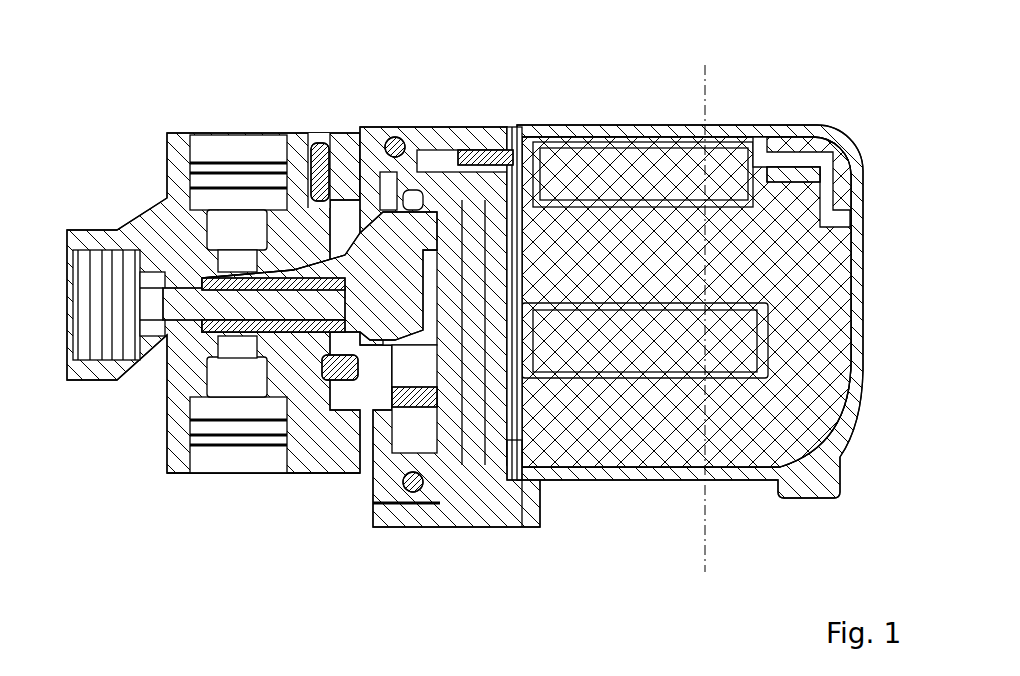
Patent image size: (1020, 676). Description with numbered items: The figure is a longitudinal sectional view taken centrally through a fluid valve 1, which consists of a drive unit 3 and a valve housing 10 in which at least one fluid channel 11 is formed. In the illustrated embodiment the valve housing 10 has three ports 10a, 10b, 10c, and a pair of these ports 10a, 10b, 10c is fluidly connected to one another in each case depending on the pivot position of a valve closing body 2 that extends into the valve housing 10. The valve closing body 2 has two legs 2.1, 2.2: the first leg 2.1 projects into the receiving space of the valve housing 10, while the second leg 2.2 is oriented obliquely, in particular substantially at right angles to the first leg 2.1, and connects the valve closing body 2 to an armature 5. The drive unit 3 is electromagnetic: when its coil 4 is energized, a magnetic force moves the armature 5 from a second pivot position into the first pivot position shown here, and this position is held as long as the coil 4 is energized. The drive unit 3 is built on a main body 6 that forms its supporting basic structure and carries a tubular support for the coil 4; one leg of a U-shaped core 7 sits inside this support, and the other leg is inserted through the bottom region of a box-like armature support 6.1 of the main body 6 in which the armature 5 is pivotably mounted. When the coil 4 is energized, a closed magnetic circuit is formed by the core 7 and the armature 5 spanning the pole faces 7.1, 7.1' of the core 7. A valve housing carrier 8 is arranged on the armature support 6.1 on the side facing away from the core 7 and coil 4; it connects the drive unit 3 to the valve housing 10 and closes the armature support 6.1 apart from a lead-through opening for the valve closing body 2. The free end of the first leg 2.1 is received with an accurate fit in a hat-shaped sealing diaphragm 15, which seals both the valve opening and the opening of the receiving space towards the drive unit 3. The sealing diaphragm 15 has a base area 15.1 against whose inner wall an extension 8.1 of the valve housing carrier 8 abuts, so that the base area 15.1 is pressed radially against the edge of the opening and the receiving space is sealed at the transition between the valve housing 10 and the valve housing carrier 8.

The fluid valve 1 is at (150, 92).
The valve closing body 2 is at (200, 278).
The first leg 2.1 is at (225, 255).
The second leg 2.2 is at (340, 143).
The drive unit 3 is at (855, 135).
The coil 4 is at (625, 148).
The armature 5 is at (423, 163).
The main body 6 is at (783, 152).
The armature support 6.1 is at (483, 527).
The U-shaped core 7 is at (868, 318).
The pole face 7.1 is at (465, 303).
The pole face 7.1' is at (577, 500).
The valve housing carrier 8 is at (373, 488).
The extension 8.1 is at (345, 372).
The valve housing 10 is at (167, 445).
The port 10a is at (228, 118).
The port 10b is at (195, 490).
The port 10c is at (50, 303).
The fluid channel 11 is at (177, 473).
The sealing diaphragm 15 is at (210, 332).
The base area 15.1 is at (330, 377).